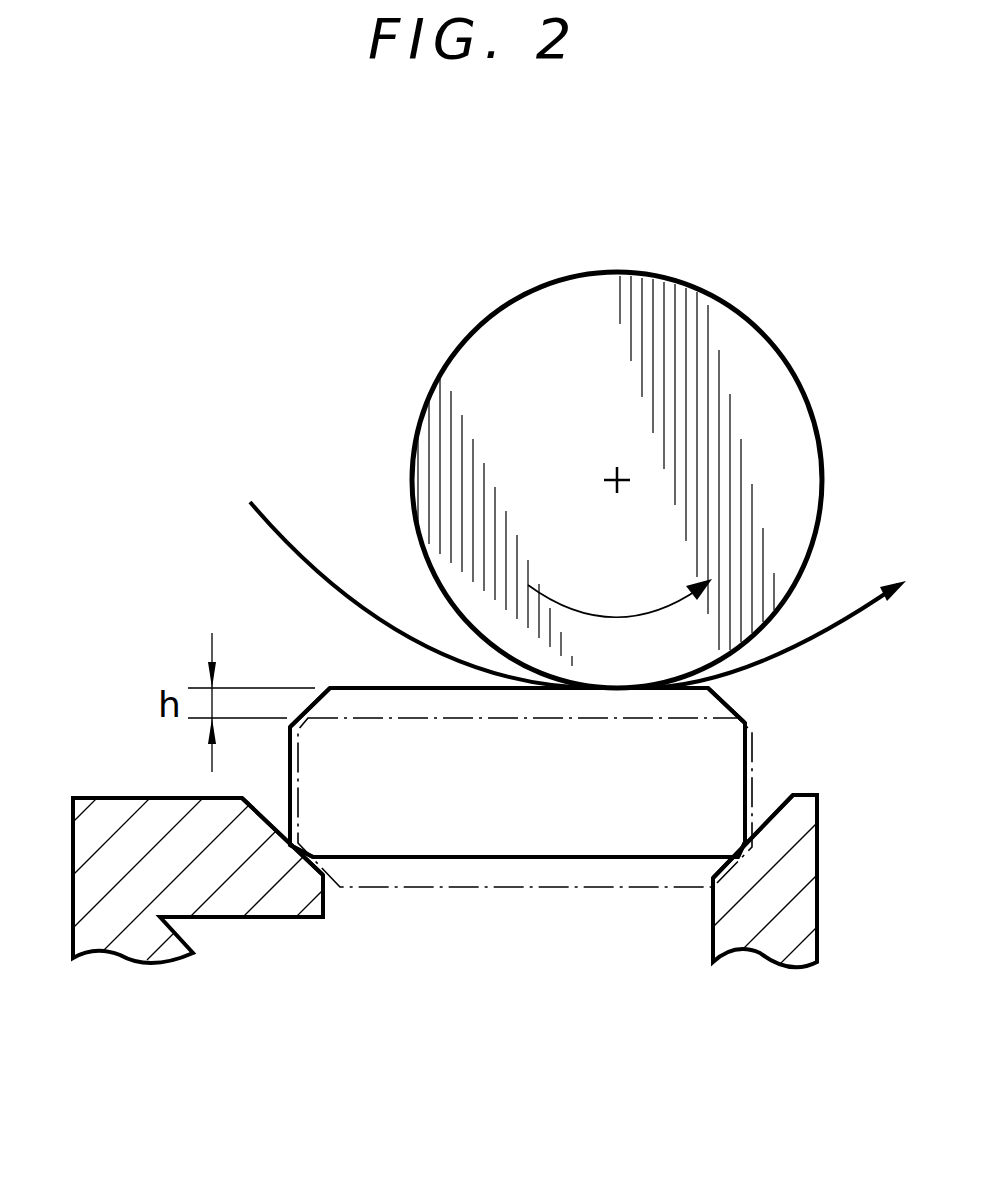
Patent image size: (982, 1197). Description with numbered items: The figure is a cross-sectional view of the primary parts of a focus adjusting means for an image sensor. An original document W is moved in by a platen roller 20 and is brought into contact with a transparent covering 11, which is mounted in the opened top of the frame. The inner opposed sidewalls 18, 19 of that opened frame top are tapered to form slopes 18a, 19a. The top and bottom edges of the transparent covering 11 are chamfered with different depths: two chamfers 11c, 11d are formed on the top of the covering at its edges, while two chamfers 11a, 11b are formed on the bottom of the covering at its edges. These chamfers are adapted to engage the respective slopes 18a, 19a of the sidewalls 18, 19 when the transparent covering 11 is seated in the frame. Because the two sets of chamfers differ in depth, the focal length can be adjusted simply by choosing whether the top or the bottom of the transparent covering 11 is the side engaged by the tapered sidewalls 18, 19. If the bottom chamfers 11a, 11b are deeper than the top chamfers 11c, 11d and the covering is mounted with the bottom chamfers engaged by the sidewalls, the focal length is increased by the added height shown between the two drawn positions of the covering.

The platen roller 20 is at (485, 370).
The original document W is at (367, 610).
The transparent covering 11 is at (555, 828).
The chamfer 11a is at (318, 700).
The chamfer 11b is at (717, 693).
The chamfer 11c is at (292, 852).
The chamfer 11d is at (747, 858).
The inner opposed sidewall 18 is at (252, 885).
The slope 18a is at (285, 848).
The inner opposed sidewall 19 is at (743, 913).
The slope 19a is at (777, 810).